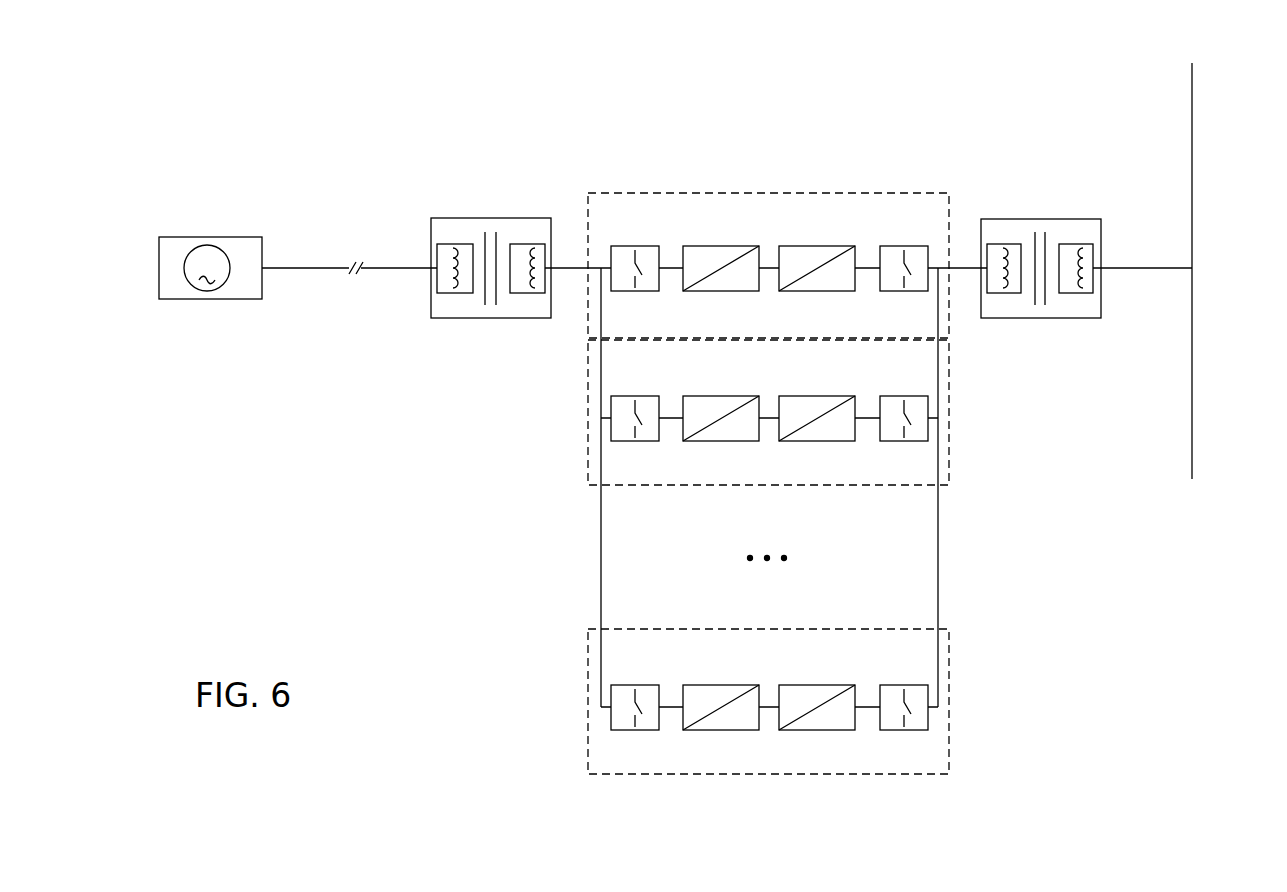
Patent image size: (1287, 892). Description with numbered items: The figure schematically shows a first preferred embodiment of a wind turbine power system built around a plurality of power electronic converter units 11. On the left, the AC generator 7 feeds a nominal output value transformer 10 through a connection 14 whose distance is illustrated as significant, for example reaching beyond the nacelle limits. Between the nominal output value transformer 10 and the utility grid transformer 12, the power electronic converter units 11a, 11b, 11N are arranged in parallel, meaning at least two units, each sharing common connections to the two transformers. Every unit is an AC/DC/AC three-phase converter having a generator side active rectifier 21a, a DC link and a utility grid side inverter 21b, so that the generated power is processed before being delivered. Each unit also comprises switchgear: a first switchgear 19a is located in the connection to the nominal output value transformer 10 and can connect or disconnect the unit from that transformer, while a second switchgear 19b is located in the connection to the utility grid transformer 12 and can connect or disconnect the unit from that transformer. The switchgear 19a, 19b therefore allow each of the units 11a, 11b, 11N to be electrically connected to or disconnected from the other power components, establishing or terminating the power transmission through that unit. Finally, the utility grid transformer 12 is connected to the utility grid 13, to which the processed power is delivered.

The AC generator 7 is at (232, 237).
The nominal output value transformer 10 is at (511, 218).
The power electronic converter unit 11 is at (819, 165).
The power electronic converter unit 11a is at (588, 305).
The power electronic converter unit 11b is at (588, 453).
The power electronic converter unit 11N is at (716, 727).
The utility grid transformer 12 is at (1065, 219).
The utility grid 13 is at (1192, 232).
The connection line 14 is at (336, 268).
The first switchgear 19a is at (647, 730).
The second switchgear 19b is at (910, 730).
The generator side active rectifier 21a is at (733, 684).
The utility grid side inverter 21b is at (830, 684).